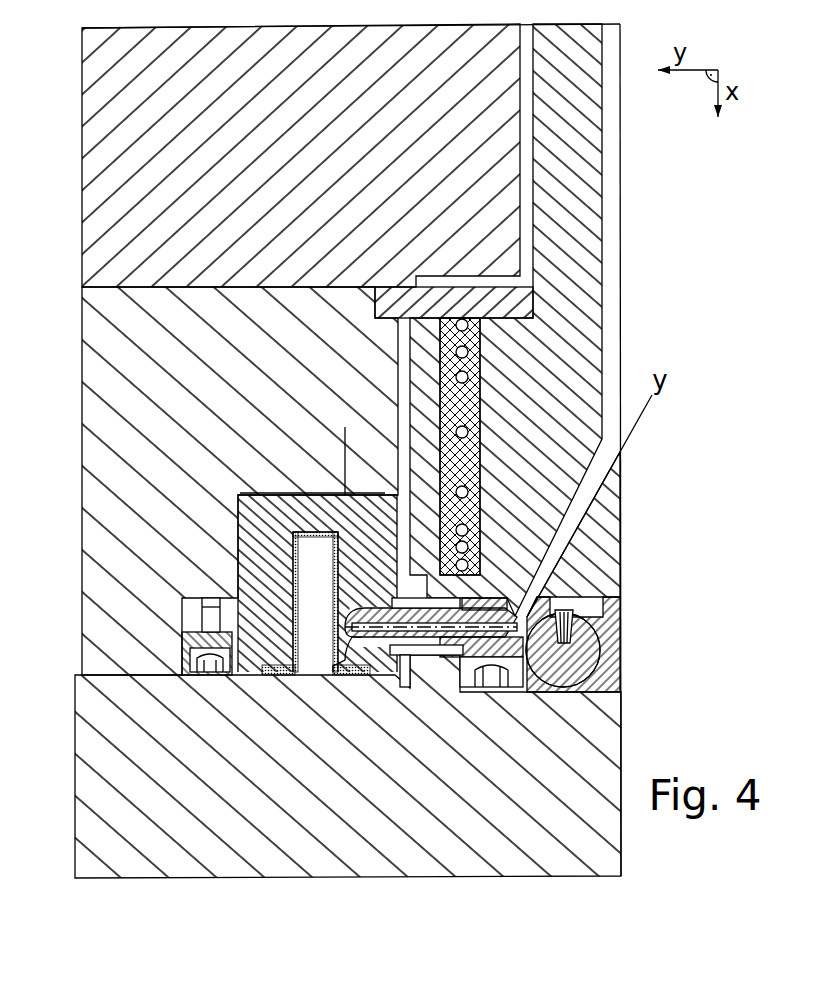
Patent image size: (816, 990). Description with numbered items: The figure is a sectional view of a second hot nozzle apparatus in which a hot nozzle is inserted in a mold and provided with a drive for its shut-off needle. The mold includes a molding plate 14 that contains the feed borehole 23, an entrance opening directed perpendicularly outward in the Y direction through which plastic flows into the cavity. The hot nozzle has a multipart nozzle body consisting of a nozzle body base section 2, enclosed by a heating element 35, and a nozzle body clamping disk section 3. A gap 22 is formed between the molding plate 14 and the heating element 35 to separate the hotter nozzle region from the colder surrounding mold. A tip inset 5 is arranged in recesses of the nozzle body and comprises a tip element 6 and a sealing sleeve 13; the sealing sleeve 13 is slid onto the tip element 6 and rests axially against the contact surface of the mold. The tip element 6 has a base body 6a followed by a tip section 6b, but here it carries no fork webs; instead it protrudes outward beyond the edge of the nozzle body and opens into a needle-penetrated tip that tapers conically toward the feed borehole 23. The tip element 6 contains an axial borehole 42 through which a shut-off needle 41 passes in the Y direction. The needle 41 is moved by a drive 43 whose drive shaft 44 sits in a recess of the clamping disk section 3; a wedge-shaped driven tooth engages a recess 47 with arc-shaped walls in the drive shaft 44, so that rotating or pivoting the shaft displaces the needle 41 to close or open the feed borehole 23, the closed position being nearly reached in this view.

The nozzle body base section 2 is at (550, 320).
The nozzle body clamping disk section 3 is at (430, 640).
The tip inset 5 is at (492, 592).
The tip element 6 is at (468, 672).
The base body 6a is at (495, 675).
The tip section 6b is at (340, 655).
The sealing sleeve 13 is at (435, 673).
The molding plate 14 is at (273, 533).
The gap 22 is at (403, 457).
The feed borehole 23 is at (345, 427).
The heating element 35 is at (515, 285).
The shut-off needle 41 is at (372, 660).
The axial borehole 42 is at (368, 645).
The drive 43 is at (545, 692).
The drive shaft 44 is at (577, 667).
The recess 47 is at (572, 627).